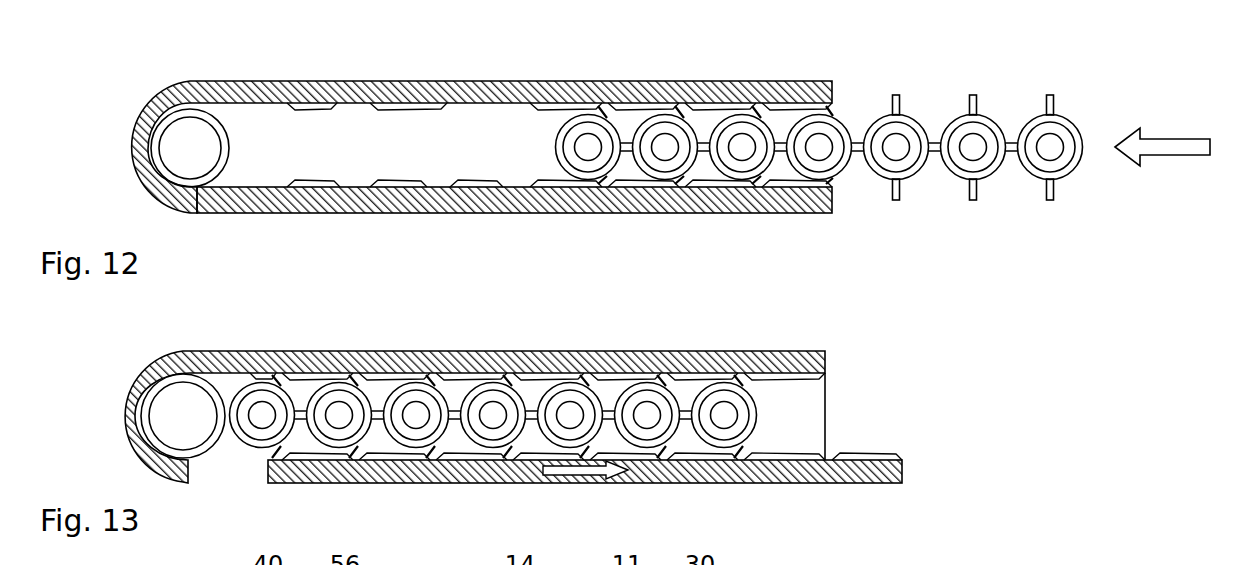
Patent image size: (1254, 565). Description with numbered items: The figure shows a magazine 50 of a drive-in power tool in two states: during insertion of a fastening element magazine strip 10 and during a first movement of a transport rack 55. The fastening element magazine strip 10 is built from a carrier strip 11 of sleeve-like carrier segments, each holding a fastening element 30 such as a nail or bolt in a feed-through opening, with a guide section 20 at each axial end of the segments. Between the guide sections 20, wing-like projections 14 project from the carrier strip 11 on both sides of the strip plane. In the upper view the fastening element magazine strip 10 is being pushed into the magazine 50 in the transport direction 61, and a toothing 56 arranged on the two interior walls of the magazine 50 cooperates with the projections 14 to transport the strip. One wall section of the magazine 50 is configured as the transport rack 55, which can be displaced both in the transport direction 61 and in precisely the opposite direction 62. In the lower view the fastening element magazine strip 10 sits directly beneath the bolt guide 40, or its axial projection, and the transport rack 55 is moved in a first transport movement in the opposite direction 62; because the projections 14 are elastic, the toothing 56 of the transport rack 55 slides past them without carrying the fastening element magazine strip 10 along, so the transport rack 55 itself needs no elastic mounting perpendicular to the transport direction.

In FIG. 12, the fastening element magazine strip 10 is at (864, 145).
In FIG. 13, the fastening element magazine strip 10 is at (583, 417).
In FIG. 12, the carrier strip 11 is at (1012, 125).
In FIG. 13, the carrier strip 11 is at (686, 408).
In FIG. 12, the wing-like projections 14 is at (894, 95).
In FIG. 13, the wing-like projections 14 is at (582, 375).
In FIG. 12, the guide section 20 is at (655, 176).
In FIG. 13, the guide section 20 is at (650, 446).
In FIG. 12, the fastening element 30 is at (739, 127).
In FIG. 13, the fastening element 30 is at (727, 400).
In FIG. 12, the bolt guide 40 is at (233, 143).
In FIG. 13, the bolt guide 40 is at (226, 405).
In FIG. 12, the magazine 50 is at (125, 125).
In FIG. 13, the magazine 50 is at (118, 397).
In FIG. 12, the transport rack 55 is at (473, 203).
In FIG. 13, the transport rack 55 is at (382, 472).
In FIG. 12, the toothing 56 is at (530, 185).
In FIG. 13, the toothing 56 is at (497, 452).
In FIG. 12, the transport direction 61 is at (1152, 150).
In FIG. 13, the opposite direction 62 is at (565, 472).